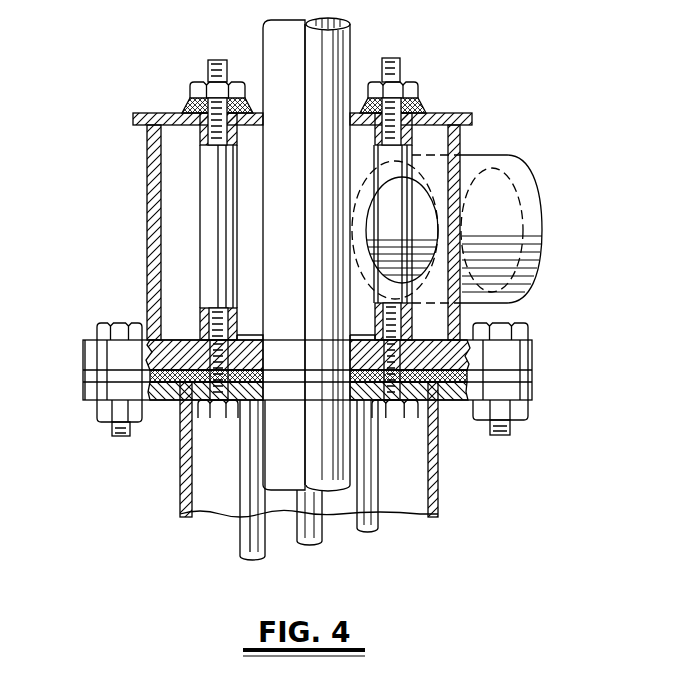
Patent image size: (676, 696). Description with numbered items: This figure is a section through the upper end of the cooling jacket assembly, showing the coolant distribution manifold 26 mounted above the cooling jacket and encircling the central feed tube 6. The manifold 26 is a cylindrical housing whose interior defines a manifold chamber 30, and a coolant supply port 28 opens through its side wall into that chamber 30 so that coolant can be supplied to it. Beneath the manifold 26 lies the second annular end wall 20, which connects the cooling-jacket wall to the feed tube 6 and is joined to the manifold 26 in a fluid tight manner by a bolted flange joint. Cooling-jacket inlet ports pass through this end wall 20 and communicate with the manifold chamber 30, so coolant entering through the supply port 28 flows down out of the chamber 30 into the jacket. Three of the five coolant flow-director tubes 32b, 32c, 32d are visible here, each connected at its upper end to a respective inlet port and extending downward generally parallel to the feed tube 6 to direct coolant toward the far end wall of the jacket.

The feed tube 6 is at (350, 47).
The second annular end wall 20 is at (250, 432).
The coolant distribution manifold 26 is at (124, 263).
The coolant supply port 28 is at (495, 155).
The manifold chamber 30 is at (182, 178).
The coolant flow-director tube 32b is at (240, 525).
The coolant flow-director tube 32c is at (323, 530).
The coolant flow-director tube 32d is at (378, 523).